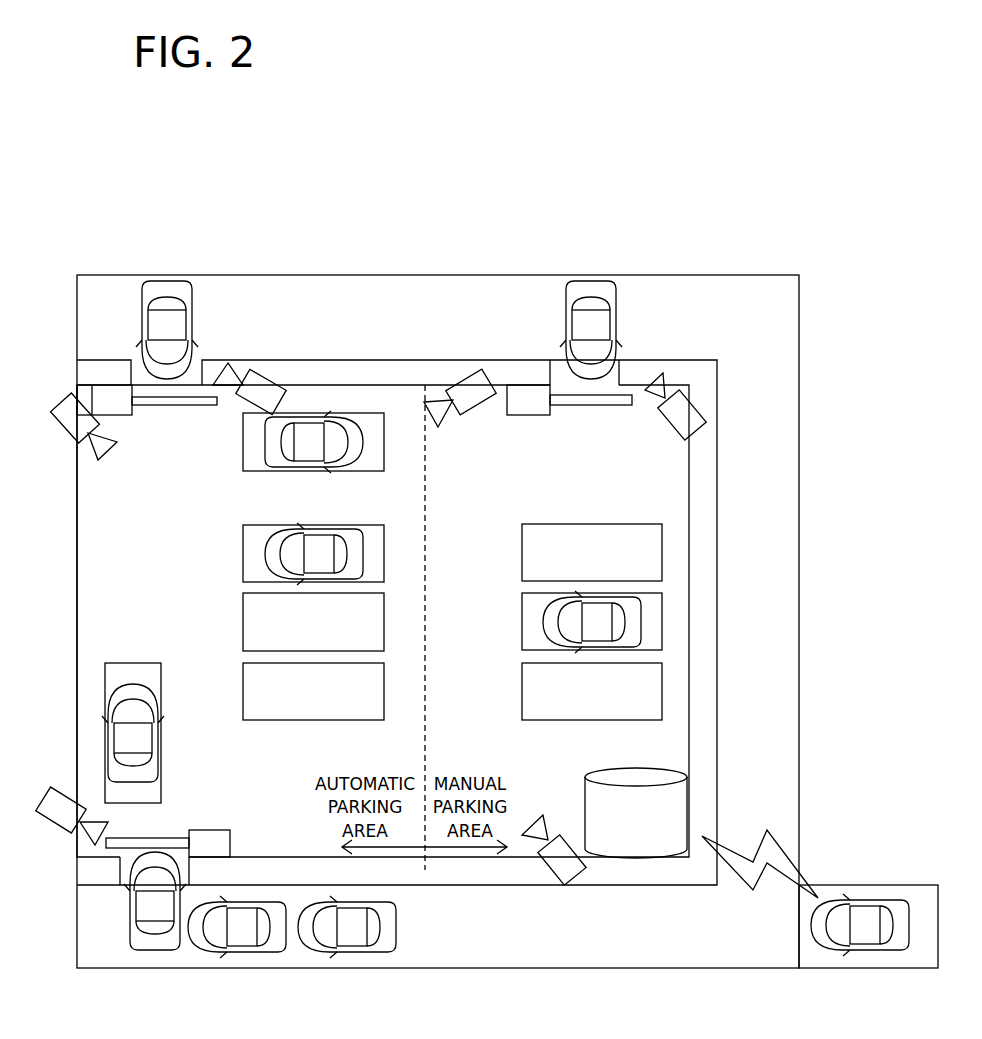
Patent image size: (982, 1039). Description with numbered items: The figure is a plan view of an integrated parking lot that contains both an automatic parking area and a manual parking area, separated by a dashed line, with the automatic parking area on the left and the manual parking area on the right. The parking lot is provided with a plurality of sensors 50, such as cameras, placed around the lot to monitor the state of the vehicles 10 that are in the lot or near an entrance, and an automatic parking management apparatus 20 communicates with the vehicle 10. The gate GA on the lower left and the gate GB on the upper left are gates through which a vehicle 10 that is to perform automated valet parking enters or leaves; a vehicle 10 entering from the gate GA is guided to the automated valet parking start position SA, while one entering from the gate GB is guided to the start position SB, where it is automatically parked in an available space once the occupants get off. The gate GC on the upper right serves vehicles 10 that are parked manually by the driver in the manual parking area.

The vehicle 10 is at (866, 904).
The automatic parking management apparatus 20 is at (632, 768).
The sensor 50 is at (70, 433).
The gate GA is at (210, 843).
The gate GB is at (112, 402).
The gate GC is at (528, 403).
The automated valet parking start position SA is at (162, 772).
The automated valet parking start position SB is at (244, 459).